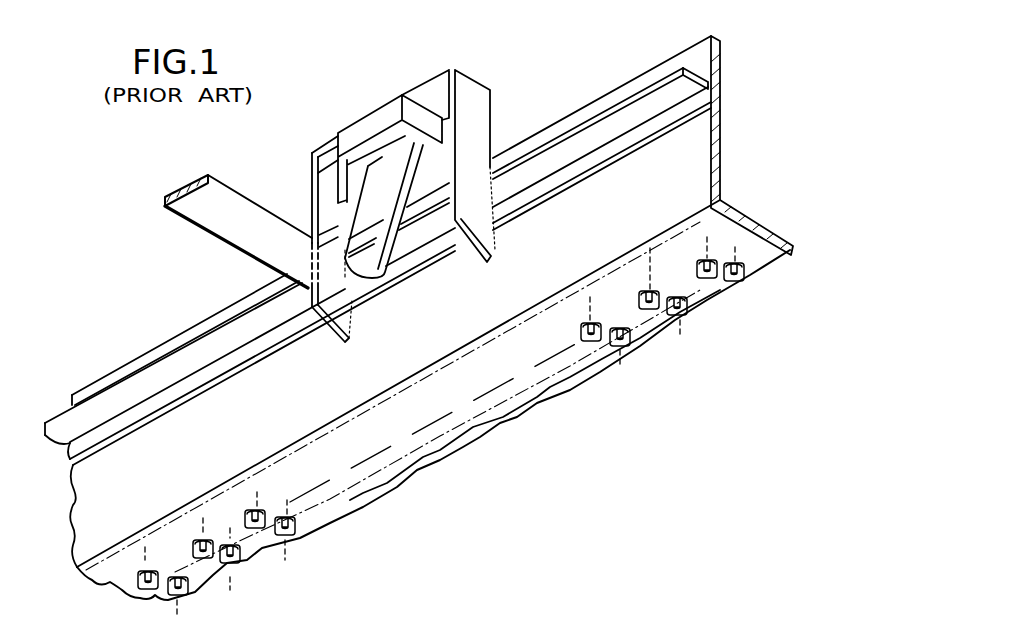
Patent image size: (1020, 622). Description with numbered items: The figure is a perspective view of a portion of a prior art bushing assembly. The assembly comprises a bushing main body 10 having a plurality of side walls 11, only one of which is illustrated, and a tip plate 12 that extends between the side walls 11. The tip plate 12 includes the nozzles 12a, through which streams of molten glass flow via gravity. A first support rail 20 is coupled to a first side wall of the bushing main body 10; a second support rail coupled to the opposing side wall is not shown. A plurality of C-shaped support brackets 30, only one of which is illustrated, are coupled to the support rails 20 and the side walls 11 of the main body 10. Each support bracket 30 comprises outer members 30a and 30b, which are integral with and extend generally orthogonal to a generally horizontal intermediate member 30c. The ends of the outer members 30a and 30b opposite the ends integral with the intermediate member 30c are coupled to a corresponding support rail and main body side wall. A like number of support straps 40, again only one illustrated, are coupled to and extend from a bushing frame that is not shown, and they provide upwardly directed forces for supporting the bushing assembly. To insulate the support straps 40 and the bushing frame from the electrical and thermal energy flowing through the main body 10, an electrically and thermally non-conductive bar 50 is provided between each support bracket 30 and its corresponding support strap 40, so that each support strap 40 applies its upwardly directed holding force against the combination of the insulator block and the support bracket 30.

The bushing main body 10 is at (434, 318).
The side wall 11 is at (697, 133).
The tip plate 12 is at (752, 247).
The nozzle 12a is at (288, 542).
The first support rail 20 is at (656, 97).
The C-shaped support bracket 30 is at (401, 187).
The outer member 30a is at (328, 183).
The outer member 30b is at (490, 128).
The intermediate member 30c is at (438, 97).
The support strap 40 is at (222, 225).
The electrically and thermally non-conductive bar 50 is at (382, 120).